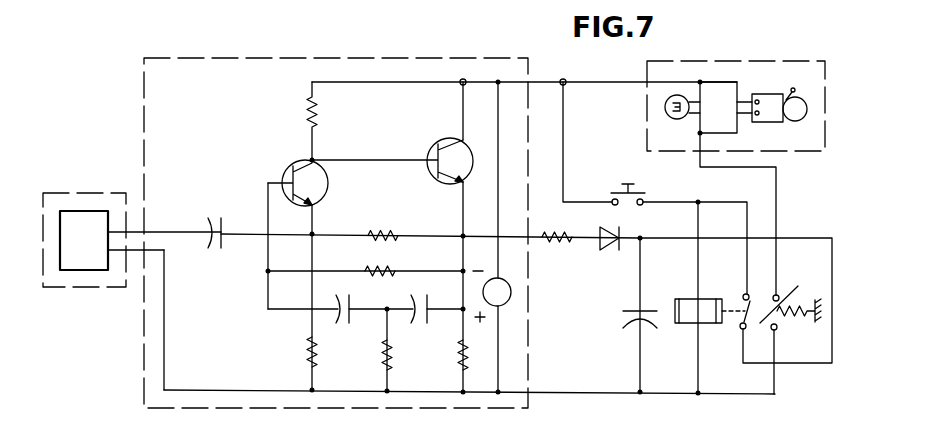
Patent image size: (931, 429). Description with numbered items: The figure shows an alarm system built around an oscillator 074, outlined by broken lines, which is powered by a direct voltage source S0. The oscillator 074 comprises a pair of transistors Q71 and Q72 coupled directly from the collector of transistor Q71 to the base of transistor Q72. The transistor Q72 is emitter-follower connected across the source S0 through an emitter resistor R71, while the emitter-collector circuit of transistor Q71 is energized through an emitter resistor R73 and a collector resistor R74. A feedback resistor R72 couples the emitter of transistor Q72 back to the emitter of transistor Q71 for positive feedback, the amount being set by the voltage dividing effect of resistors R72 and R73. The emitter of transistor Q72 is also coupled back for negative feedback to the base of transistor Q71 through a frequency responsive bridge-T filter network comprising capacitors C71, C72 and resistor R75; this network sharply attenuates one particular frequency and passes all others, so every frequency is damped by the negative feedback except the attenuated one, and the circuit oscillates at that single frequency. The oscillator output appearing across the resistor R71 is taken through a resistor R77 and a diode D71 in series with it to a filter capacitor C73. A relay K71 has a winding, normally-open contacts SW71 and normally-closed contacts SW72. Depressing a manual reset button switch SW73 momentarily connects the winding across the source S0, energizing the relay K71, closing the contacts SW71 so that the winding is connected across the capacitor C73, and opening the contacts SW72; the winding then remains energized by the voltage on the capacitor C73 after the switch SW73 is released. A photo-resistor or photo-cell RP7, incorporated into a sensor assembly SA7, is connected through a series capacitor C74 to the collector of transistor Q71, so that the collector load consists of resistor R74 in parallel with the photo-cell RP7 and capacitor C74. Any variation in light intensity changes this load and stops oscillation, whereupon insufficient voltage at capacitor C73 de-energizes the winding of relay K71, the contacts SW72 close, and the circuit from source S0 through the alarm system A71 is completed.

The oscillator 074 is at (478, 57).
The sensor assembly SA7 is at (74, 195).
The photo-resistor or photo-cell RP7 is at (90, 222).
The series capacitor C74 is at (209, 250).
The collector resistor R74 is at (318, 108).
The transistor Q71 is at (329, 191).
The transistor Q72 is at (430, 149).
The feedback resistor R72 is at (390, 230).
The resistor R75 is at (392, 270).
The capacitor C71 is at (354, 298).
The capacitor C72 is at (412, 325).
The emitter resistor R73 is at (306, 352).
The emitter resistor R71 is at (455, 365).
The direct voltage source S0 is at (507, 302).
The resistor R77 is at (547, 242).
The diode D71 is at (600, 230).
The filter capacitor C73 is at (622, 311).
The relay K71 is at (685, 325).
The normally-open contacts SW71 is at (740, 308).
The normally-closed contacts SW72 is at (793, 303).
The manual reset button switch SW73 is at (630, 190).
The alarm system A71 is at (715, 58).